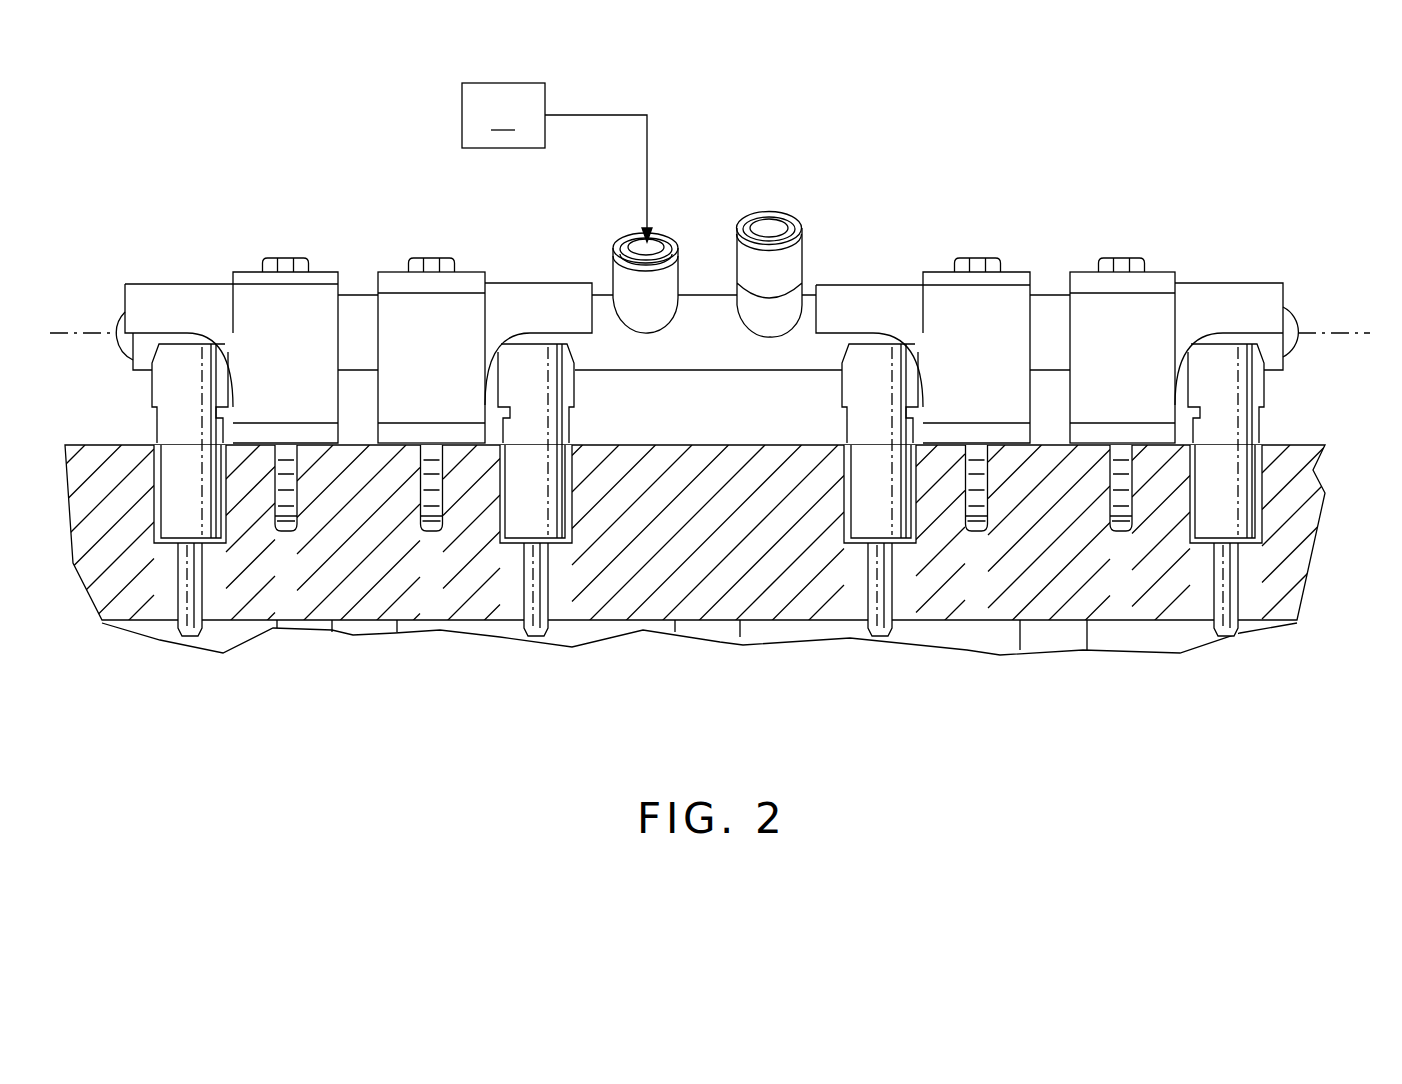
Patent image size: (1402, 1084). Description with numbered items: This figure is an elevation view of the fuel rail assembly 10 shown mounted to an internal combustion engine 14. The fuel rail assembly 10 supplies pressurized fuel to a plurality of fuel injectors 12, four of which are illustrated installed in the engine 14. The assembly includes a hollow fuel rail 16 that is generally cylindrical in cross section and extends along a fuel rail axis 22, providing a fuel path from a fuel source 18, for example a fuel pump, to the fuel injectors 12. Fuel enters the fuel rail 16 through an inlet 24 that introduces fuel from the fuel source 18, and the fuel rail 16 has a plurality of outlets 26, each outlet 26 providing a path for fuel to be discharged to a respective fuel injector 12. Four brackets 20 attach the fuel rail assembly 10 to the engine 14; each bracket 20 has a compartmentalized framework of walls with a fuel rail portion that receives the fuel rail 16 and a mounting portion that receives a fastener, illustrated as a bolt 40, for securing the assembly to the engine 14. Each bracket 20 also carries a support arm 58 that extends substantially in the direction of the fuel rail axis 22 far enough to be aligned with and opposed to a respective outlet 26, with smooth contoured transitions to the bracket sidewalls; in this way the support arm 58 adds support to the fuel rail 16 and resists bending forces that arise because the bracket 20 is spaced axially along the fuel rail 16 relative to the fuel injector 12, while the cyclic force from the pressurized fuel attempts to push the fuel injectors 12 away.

The fuel rail assembly 10 is at (766, 178).
The fuel injector 12 is at (175, 527).
The internal combustion engine 14 is at (696, 566).
The fuel rail 16 is at (367, 302).
The fuel source 18 is at (557, 162).
The bracket 20 is at (252, 295).
The fuel rail axis 22 is at (102, 333).
The inlet 24 is at (665, 268).
The outlet 26 is at (207, 440).
The bolt 40 is at (420, 507).
The support arm 58 is at (157, 290).